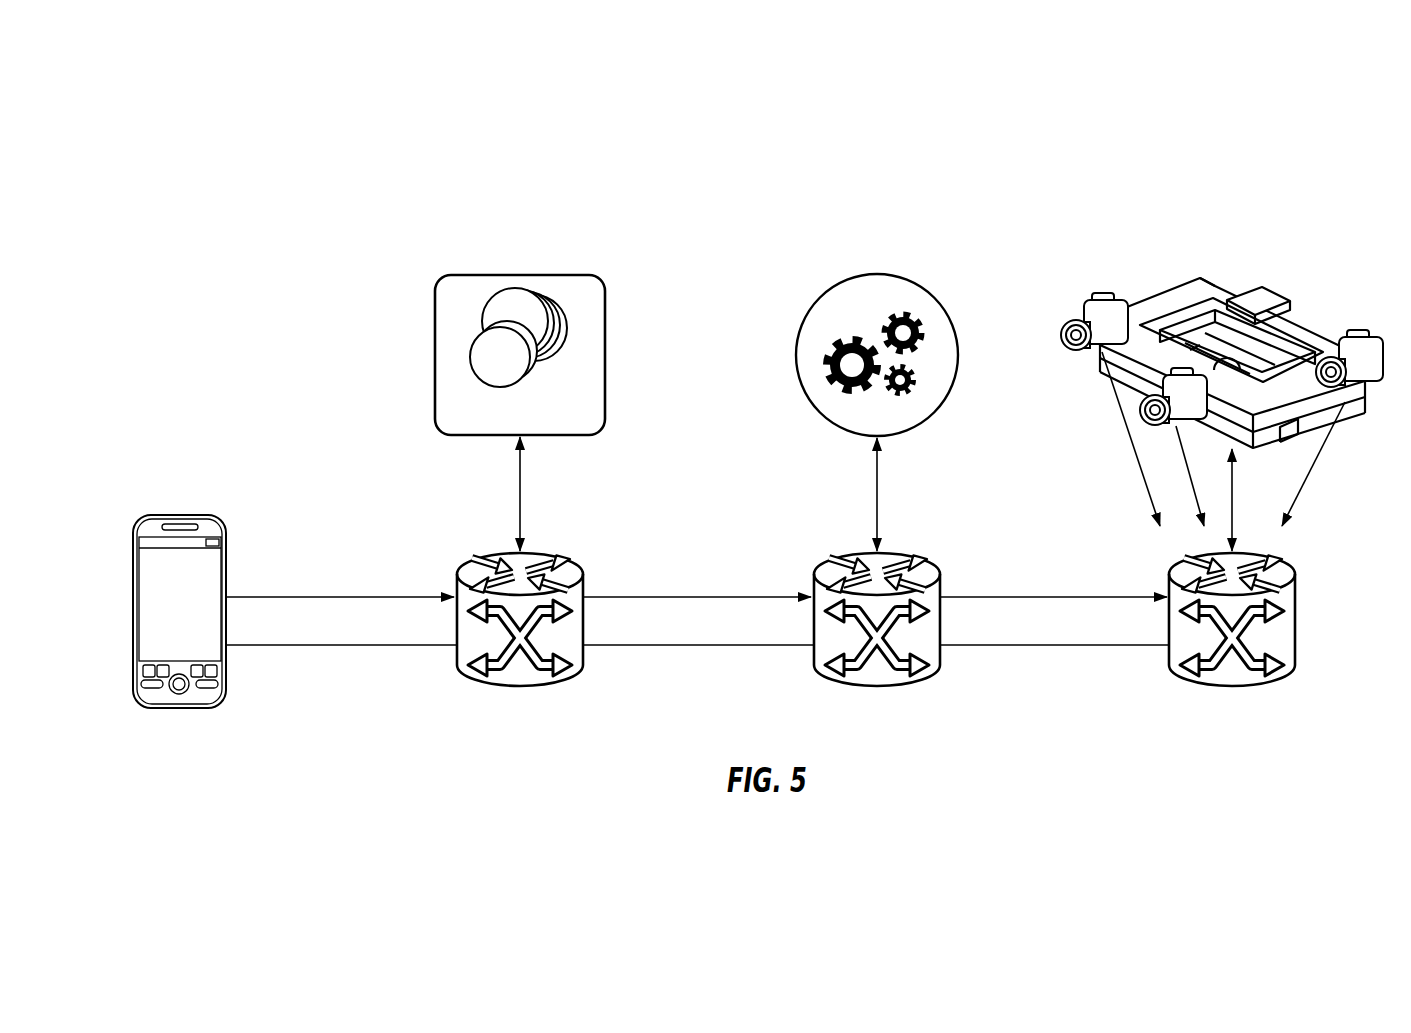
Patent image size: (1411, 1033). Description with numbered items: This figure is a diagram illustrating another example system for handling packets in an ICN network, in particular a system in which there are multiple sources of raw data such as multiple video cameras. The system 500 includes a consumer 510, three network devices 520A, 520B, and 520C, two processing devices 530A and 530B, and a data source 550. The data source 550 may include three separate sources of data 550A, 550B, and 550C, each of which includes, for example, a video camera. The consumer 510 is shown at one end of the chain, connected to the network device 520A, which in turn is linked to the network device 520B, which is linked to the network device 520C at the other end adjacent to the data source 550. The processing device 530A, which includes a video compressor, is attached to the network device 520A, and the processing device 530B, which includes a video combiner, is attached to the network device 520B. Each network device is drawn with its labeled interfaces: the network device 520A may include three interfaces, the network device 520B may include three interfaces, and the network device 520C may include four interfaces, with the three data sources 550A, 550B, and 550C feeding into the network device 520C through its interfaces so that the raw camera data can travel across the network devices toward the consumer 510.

The system 500 is at (1313, 150).
The consumer 510 is at (226, 690).
The network device 520A is at (466, 680).
The network device 520B is at (822, 680).
The network device 520C is at (1177, 680).
The processing device 530A is at (435, 298).
The processing device 530B is at (820, 298).
The data source 550 is at (1313, 260).
The source of data 550A is at (1094, 303).
The source of data 550B is at (1182, 382).
The source of data 550C is at (1340, 338).